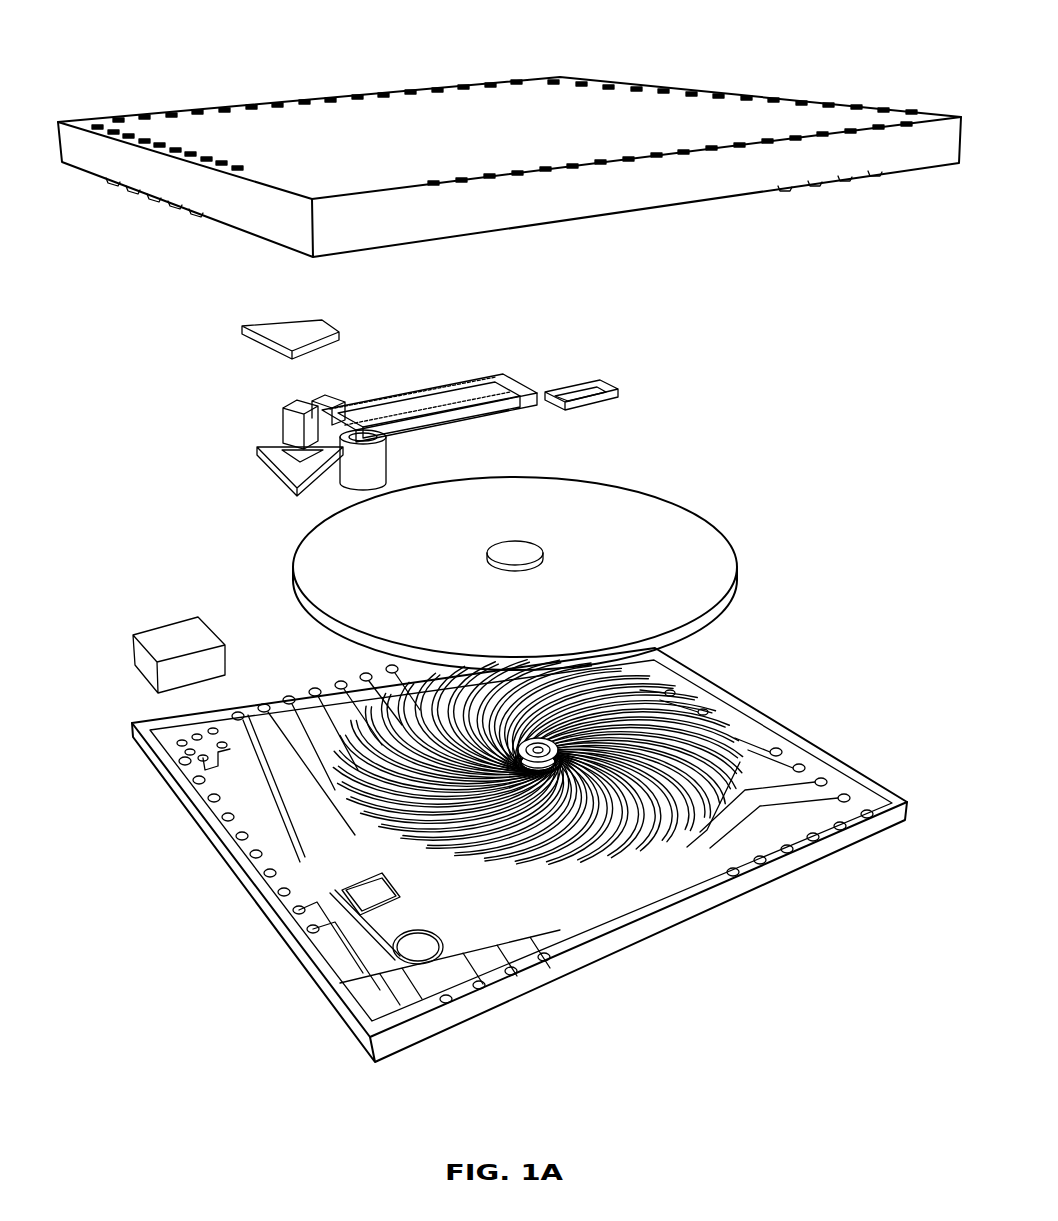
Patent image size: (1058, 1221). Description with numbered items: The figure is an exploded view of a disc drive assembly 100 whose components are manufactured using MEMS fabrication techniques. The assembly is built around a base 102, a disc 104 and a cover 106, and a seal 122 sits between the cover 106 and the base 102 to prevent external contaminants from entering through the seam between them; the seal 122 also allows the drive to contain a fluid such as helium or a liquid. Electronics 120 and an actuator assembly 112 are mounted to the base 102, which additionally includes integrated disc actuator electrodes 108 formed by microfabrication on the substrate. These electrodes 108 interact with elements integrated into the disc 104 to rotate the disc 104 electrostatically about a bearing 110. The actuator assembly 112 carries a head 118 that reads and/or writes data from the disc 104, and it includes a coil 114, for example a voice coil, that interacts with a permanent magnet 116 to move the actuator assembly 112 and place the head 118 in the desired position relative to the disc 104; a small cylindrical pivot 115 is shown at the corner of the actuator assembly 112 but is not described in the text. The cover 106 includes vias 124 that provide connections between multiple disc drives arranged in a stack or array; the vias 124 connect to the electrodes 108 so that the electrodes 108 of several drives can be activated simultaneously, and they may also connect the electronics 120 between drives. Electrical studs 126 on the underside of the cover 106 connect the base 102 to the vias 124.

The disc drive assembly 100 is at (178, 57).
The base 102 is at (506, 927).
The disc 104 is at (628, 593).
The cover 106 is at (501, 139).
The disc actuator electrodes 108 is at (496, 809).
The bearing 110 is at (668, 693).
The actuator assembly 112 is at (489, 347).
The coil 114 is at (285, 443).
The cylinder 115 is at (367, 455).
The permanent magnet 116 is at (298, 322).
The head 118 is at (590, 403).
The electronics 120 is at (138, 652).
The seal 122 is at (850, 768).
The vias 124 is at (912, 112).
The electrical studs 126 is at (220, 228).